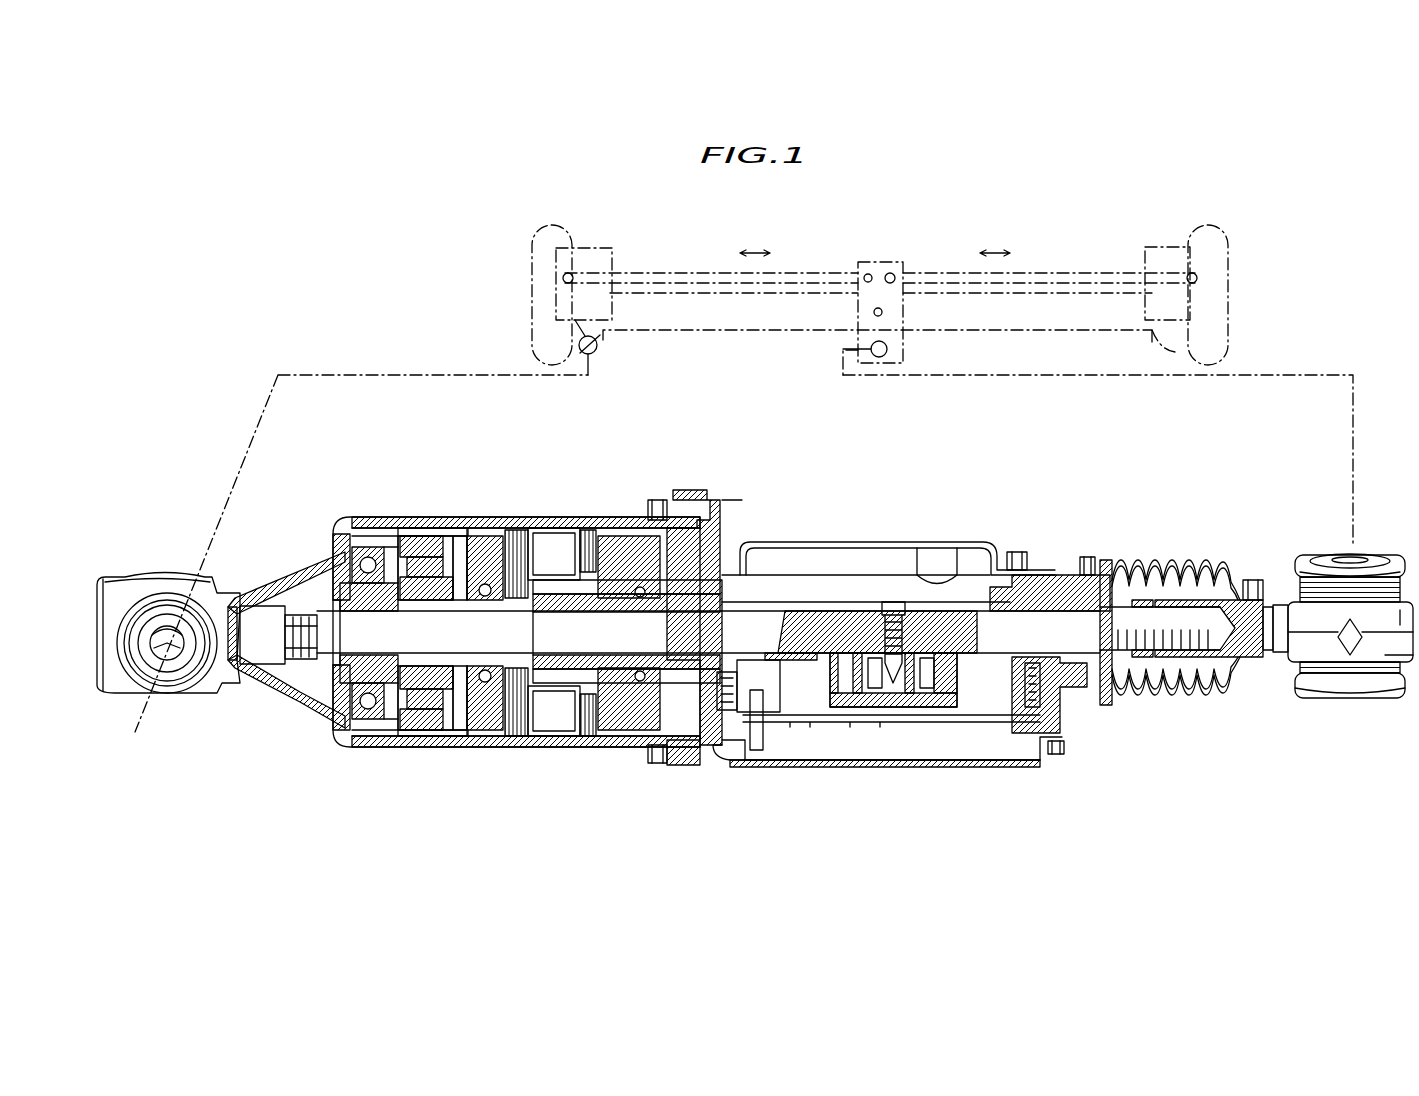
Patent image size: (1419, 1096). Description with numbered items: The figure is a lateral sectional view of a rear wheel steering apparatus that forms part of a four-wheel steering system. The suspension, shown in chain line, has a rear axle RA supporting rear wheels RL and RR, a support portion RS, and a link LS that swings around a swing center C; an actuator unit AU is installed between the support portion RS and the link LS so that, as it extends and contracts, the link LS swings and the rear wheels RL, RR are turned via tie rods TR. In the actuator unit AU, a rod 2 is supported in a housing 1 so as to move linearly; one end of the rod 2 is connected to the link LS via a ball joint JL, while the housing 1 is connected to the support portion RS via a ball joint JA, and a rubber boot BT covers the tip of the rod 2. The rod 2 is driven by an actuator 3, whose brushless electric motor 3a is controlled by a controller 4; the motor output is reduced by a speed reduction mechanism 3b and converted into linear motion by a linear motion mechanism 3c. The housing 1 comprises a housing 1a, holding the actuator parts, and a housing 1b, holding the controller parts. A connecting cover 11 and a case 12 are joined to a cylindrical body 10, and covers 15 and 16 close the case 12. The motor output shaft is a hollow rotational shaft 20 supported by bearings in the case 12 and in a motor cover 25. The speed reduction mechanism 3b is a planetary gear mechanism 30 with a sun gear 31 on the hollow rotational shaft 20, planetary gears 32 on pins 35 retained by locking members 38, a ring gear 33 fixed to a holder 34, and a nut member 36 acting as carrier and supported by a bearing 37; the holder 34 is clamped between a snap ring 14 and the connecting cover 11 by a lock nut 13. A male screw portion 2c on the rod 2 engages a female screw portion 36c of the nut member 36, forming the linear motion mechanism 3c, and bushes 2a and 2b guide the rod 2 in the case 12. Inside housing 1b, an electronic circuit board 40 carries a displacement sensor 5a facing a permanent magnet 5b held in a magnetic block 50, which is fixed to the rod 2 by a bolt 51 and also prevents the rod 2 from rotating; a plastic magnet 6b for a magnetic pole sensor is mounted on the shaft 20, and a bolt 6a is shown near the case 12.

The housing 1 is at (693, 776).
The housing 1a is at (598, 768).
The housing 1b is at (822, 773).
The rod 2 is at (568, 648).
The bush 2a is at (774, 600).
The bush 2b is at (1052, 600).
The male screw portion 2c is at (318, 700).
The actuator 3 is at (381, 772).
The electric motor 3a is at (584, 509).
The speed reduction mechanism 3b is at (411, 757).
The linear motion mechanism 3c is at (324, 686).
The controller 4 is at (897, 758).
The displacement sensor 5a is at (885, 718).
The permanent magnet 5b is at (930, 708).
The upper bolt 6a is at (660, 520).
The plastic magnet 6b is at (660, 745).
The cylindrical body 10 is at (538, 530).
The connecting cover 11 is at (272, 688).
The case 12 is at (702, 545).
The lock nut 13 is at (352, 545).
The snap ring 14 is at (463, 540).
The cover 15 is at (945, 542).
The cover 16 is at (1040, 766).
The hollow rotational shaft 20 is at (522, 736).
The motor cover 25 is at (472, 740).
The planetary gear mechanism 30 is at (439, 706).
The sun gear 31 is at (490, 545).
The planetary gears 32 is at (437, 535).
The ring gear 33 is at (418, 528).
The holder 34 is at (388, 545).
The pins 35 is at (378, 548).
The nut member 36 is at (298, 558).
The female screw portion 36c is at (330, 600).
The bearing 37 is at (342, 562).
The locking member 38 is at (457, 530).
The electronic circuit board 40 is at (955, 700).
The magnetic block 50 is at (965, 692).
The bolt 51 is at (893, 600).
The ball joint JA is at (168, 690).
The ball joint JL is at (1345, 698).
The rubber boot BT is at (1152, 695).
The actuator unit AU is at (714, 482).
The tie rods TR is at (674, 273).
The rear wheel RL is at (532, 293).
The rear wheel RR is at (1234, 312).
The rear axle RA is at (680, 330).
The support portion RS is at (590, 349).
The link LS is at (845, 349).
The swing center C is at (880, 313).